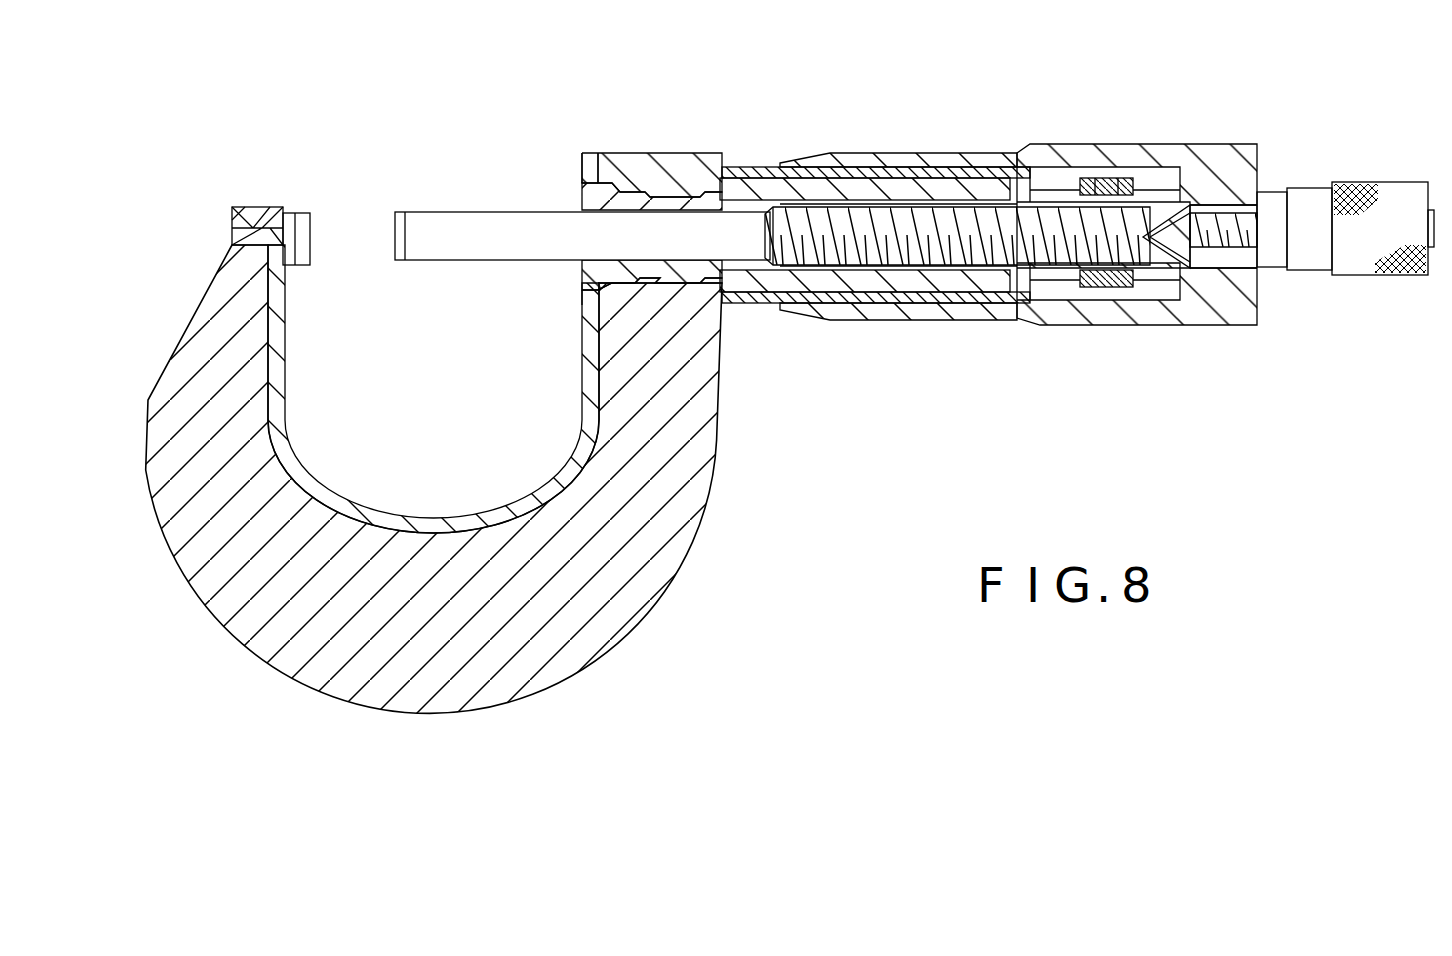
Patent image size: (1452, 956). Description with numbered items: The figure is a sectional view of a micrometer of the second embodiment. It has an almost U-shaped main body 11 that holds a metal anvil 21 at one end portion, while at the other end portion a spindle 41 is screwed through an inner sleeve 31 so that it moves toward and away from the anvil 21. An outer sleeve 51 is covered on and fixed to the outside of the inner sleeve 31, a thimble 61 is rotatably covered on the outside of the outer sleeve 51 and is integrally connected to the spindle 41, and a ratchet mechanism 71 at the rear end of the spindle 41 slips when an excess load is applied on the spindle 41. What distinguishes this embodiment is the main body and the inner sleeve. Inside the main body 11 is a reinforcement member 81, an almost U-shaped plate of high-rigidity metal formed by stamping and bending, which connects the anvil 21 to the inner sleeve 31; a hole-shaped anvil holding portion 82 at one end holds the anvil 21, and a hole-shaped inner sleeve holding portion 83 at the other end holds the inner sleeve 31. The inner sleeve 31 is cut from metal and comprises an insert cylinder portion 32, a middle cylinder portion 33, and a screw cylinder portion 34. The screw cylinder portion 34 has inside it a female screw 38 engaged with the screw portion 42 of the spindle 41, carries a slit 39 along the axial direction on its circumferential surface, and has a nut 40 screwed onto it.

The main body 11 is at (588, 648).
The anvil 21 is at (303, 213).
The inner sleeve 31 is at (885, 292).
The insert cylinder portion 32 is at (673, 190).
The middle cylinder portion 33 is at (883, 190).
The screw cylinder portion 34 is at (1057, 200).
The female screw 38 is at (1015, 200).
The slit 39 is at (1090, 180).
The nut 40 is at (1140, 210).
The spindle 41 is at (477, 248).
The screw portion 42 is at (1010, 248).
The outer sleeve 51 is at (755, 303).
The thimble 61 is at (1125, 325).
The ratchet mechanism 71 is at (1362, 272).
The reinforcement member 81 is at (410, 522).
The anvil holding portion 82 is at (247, 207).
The inner sleeve holding portion 83 is at (582, 190).